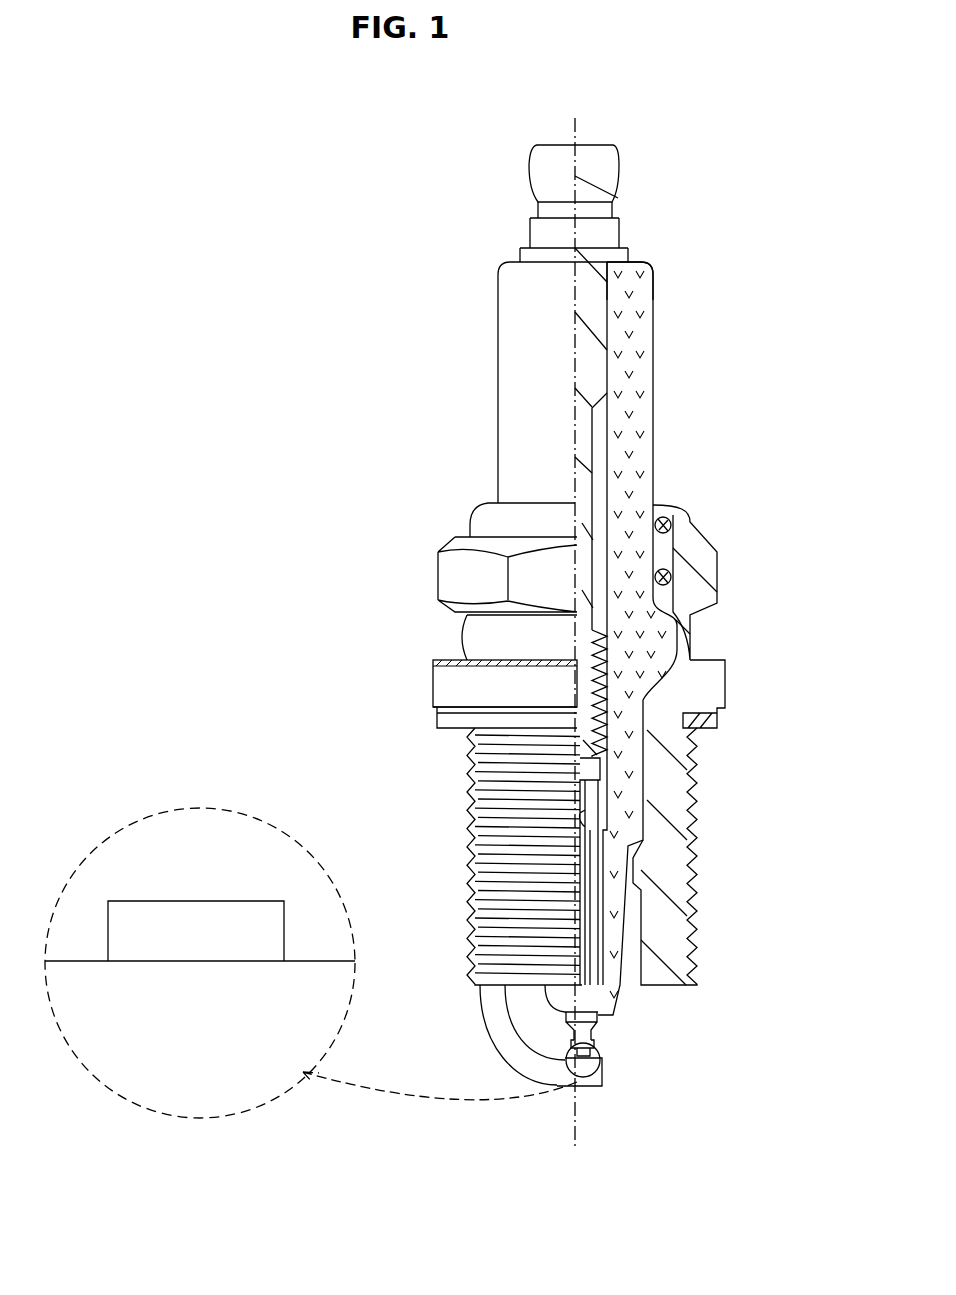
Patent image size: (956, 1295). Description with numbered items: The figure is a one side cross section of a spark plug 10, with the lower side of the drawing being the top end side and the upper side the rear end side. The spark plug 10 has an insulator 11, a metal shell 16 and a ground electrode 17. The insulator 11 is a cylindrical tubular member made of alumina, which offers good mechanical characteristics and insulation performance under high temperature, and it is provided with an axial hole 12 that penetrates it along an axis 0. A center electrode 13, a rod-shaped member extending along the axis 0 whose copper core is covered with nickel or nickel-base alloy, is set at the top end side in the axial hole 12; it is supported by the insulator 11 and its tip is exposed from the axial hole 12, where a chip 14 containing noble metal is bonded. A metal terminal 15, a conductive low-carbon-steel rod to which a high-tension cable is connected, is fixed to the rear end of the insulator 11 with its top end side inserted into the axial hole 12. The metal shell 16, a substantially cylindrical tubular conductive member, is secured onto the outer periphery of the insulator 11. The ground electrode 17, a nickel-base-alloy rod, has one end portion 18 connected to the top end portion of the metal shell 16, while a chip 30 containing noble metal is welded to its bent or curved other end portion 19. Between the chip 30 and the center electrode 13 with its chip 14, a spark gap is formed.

The axis 0 is at (578, 124).
The spark plug 10 is at (762, 189).
The insulator 11 is at (647, 449).
The axial hole 12 is at (607, 292).
The center electrode 13 is at (590, 1018).
The chip 14 is at (595, 1043).
The metal terminal 15 is at (552, 177).
The metal shell 16 is at (452, 673).
The ground electrode 17 is at (523, 1065).
The one end portion 18 is at (486, 996).
The other end portion 19 is at (593, 1072).
The chip 30 is at (195, 920).